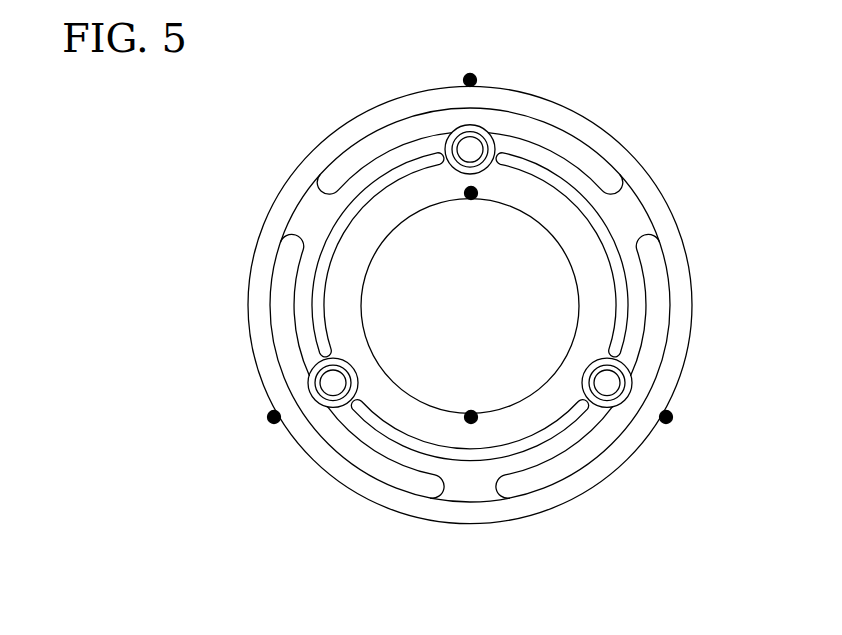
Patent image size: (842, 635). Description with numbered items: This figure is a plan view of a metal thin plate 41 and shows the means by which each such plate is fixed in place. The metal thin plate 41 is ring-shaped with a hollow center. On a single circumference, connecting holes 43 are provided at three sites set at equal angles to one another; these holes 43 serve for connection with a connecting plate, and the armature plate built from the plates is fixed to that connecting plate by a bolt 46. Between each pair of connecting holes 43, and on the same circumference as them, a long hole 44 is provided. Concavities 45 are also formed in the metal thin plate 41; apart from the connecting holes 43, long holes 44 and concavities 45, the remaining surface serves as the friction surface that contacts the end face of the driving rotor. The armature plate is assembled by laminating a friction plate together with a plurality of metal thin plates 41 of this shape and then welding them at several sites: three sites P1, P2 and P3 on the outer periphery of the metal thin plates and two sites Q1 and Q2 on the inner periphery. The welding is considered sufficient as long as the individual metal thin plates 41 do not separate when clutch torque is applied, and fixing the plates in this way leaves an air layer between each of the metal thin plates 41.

The metal thin plate 41 is at (614, 128).
The connecting hole 43 is at (521, 140).
The long hole 44 is at (330, 222).
The concavity 45 is at (597, 163).
The bolt 46 is at (466, 143).
The welding site on outer periphery P1 is at (478, 77).
The welding site on outer periphery P2 is at (676, 421).
The welding site on outer periphery P3 is at (272, 418).
The welding site on inner periphery Q1 is at (472, 197).
The welding site on inner periphery Q2 is at (471, 413).